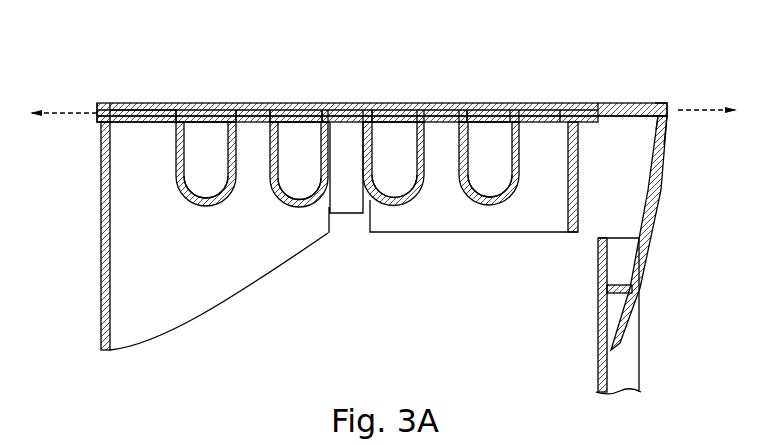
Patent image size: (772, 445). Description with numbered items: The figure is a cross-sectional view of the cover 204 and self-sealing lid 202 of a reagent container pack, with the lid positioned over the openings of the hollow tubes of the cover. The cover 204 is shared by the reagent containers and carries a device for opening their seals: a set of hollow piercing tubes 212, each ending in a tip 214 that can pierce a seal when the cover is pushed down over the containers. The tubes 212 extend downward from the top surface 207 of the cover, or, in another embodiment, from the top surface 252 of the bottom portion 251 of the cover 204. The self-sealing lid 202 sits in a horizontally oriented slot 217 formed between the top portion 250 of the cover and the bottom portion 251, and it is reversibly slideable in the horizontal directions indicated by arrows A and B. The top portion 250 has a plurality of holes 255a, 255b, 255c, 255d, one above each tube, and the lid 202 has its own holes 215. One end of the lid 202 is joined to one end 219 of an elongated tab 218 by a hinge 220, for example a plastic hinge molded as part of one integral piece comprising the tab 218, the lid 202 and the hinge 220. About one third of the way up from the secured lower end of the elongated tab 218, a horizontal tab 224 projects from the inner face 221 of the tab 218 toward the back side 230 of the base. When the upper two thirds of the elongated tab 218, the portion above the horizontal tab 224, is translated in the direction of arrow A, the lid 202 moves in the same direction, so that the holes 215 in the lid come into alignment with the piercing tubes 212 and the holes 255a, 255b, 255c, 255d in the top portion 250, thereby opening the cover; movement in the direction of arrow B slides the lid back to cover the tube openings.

The self-sealing lid 202 is at (625, 103).
The cover 204 is at (99, 222).
The top surface of the cover 207 is at (127, 103).
The hollow piercing tube 212 is at (200, 103).
The tip 214 is at (206, 206).
The holes in the sealing lid 215 is at (268, 103).
The horizontal slot 217 is at (186, 103).
The elongated tab 218 is at (655, 210).
The end of the elongated tab 219 is at (676, 128).
The hinge 220 is at (670, 105).
The inner face of the elongated tab 221 is at (655, 118).
The horizontal tab 224 is at (625, 285).
The back side of the base 230 is at (598, 323).
The top portion of the cover 250 is at (98, 104).
The bottom portion of the cover 251 is at (100, 252).
The top surface of the bottom portion 252 is at (100, 130).
The hole 255a is at (212, 103).
The hole 255b is at (312, 103).
The hole 255c is at (410, 103).
The hole 255d is at (500, 103).
The arrow A is at (63, 108).
The arrow B is at (705, 108).